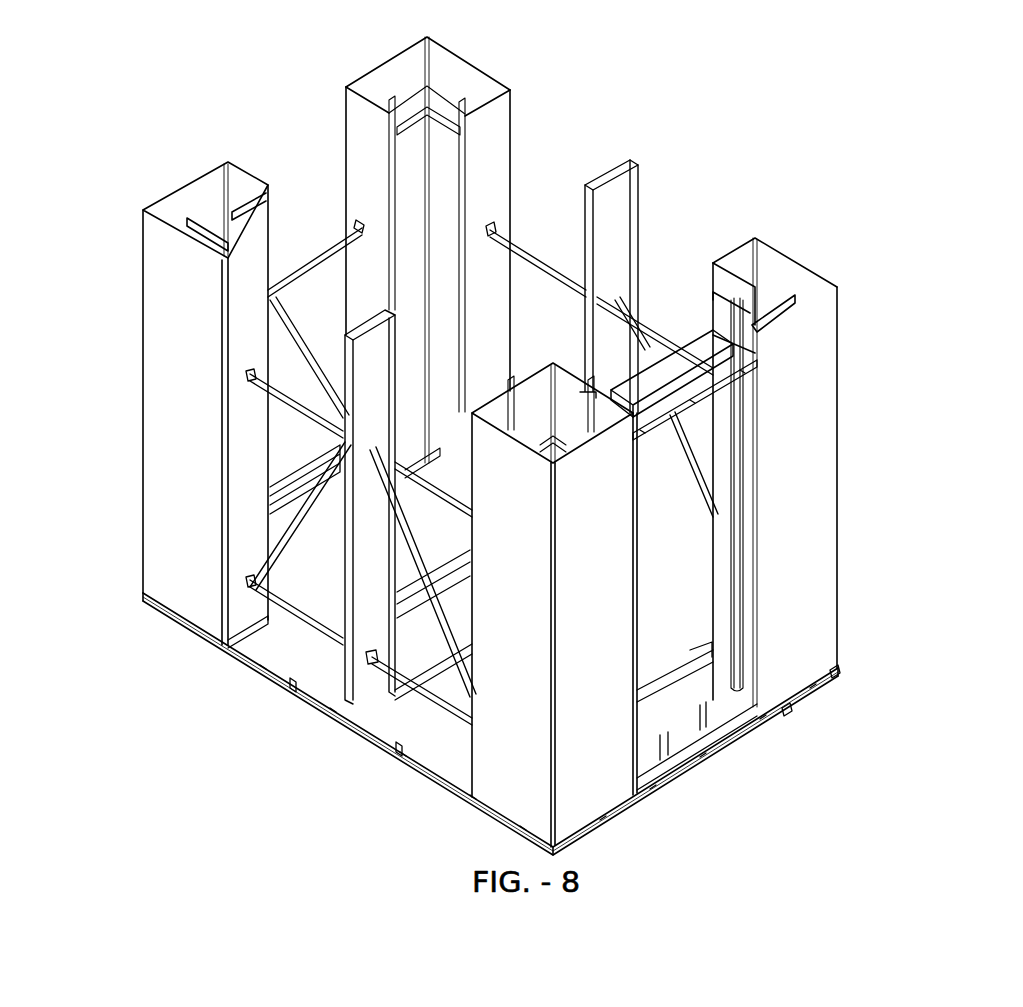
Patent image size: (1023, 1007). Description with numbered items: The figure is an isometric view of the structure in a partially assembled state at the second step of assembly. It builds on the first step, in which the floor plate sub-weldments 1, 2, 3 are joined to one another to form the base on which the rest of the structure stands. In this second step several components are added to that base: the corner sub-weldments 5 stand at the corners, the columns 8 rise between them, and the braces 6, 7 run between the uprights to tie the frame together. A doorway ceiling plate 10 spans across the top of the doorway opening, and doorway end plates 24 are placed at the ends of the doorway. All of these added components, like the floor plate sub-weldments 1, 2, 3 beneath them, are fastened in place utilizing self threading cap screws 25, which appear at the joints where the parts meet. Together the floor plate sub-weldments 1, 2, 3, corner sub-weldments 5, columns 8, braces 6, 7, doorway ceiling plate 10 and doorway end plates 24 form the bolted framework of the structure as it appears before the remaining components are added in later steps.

The floor plate sub-weldment 1 is at (455, 768).
The floor plate sub-weldment 2 is at (363, 675).
The floor plate sub-weldment 3 is at (252, 593).
The corner sub-weldment 5 is at (178, 277).
The brace 6 is at (305, 256).
The brace 7 is at (283, 316).
The column 8 is at (342, 366).
The doorway ceiling plate 10 is at (690, 363).
The doorway end plate 24 is at (706, 384).
The self threading cap screw 25 is at (360, 220).